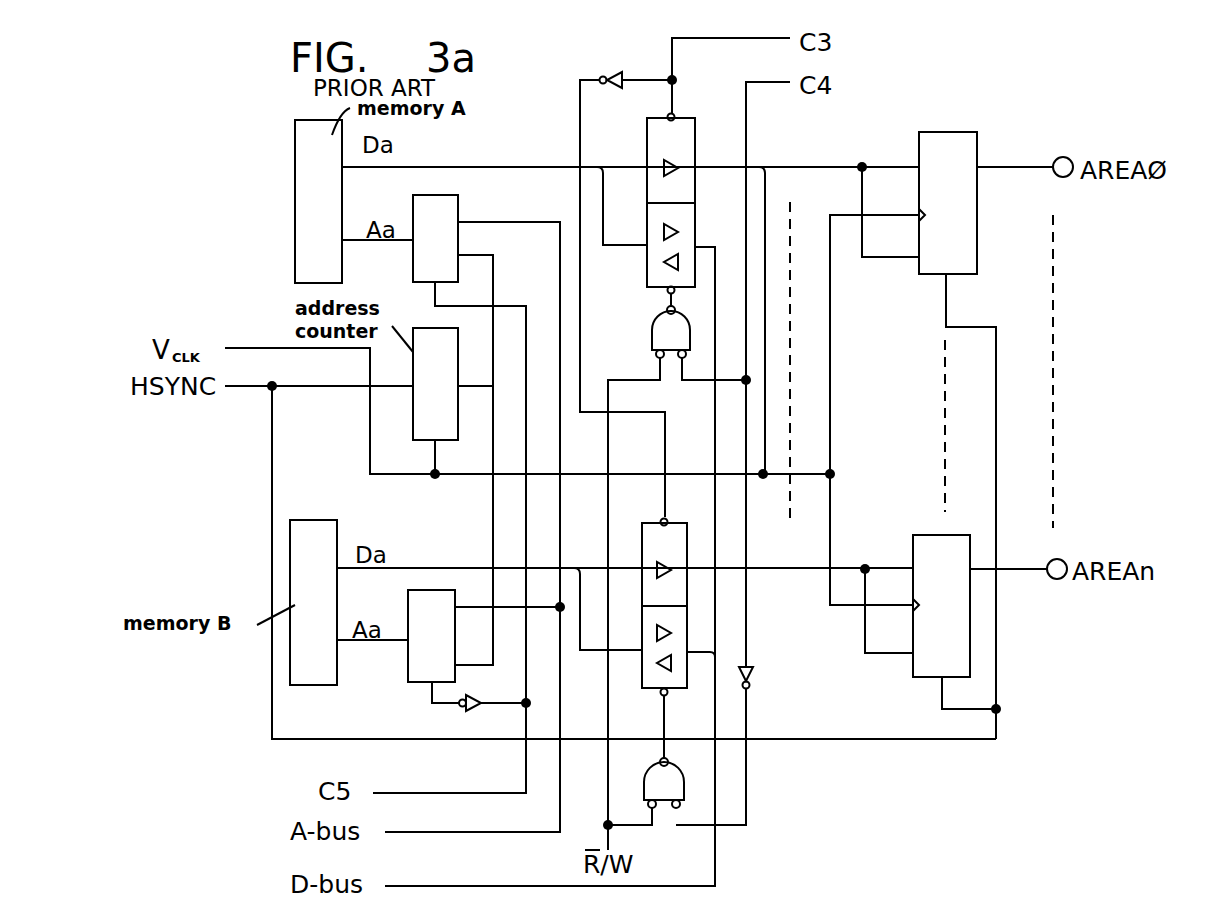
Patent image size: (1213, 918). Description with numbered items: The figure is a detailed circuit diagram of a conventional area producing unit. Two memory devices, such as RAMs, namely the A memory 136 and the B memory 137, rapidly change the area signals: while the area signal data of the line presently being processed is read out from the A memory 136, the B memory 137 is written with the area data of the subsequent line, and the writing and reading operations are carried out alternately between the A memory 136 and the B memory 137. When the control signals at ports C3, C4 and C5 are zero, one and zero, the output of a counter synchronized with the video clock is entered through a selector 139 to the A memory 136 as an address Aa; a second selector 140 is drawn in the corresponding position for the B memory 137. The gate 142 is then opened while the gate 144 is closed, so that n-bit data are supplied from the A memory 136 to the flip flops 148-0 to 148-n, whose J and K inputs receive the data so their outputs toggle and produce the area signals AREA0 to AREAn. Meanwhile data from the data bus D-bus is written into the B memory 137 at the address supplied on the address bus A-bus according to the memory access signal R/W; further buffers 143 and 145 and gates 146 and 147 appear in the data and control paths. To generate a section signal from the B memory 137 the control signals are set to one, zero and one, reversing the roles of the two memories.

The A memory 136 is at (295, 190).
The B memory 137 is at (335, 497).
The selector 139 is at (460, 203).
The selector (memory B address) 140 is at (468, 560).
The gate 142 is at (722, 118).
The bidirectional buffer 143 is at (720, 230).
The gate 144 is at (704, 504).
The bidirectional buffer 145 is at (645, 690).
The A memory 146 is at (652, 322).
The NAND gate 147 is at (648, 768).
The flip flop 148-0 is at (965, 120).
The flip flop 148-n is at (920, 535).